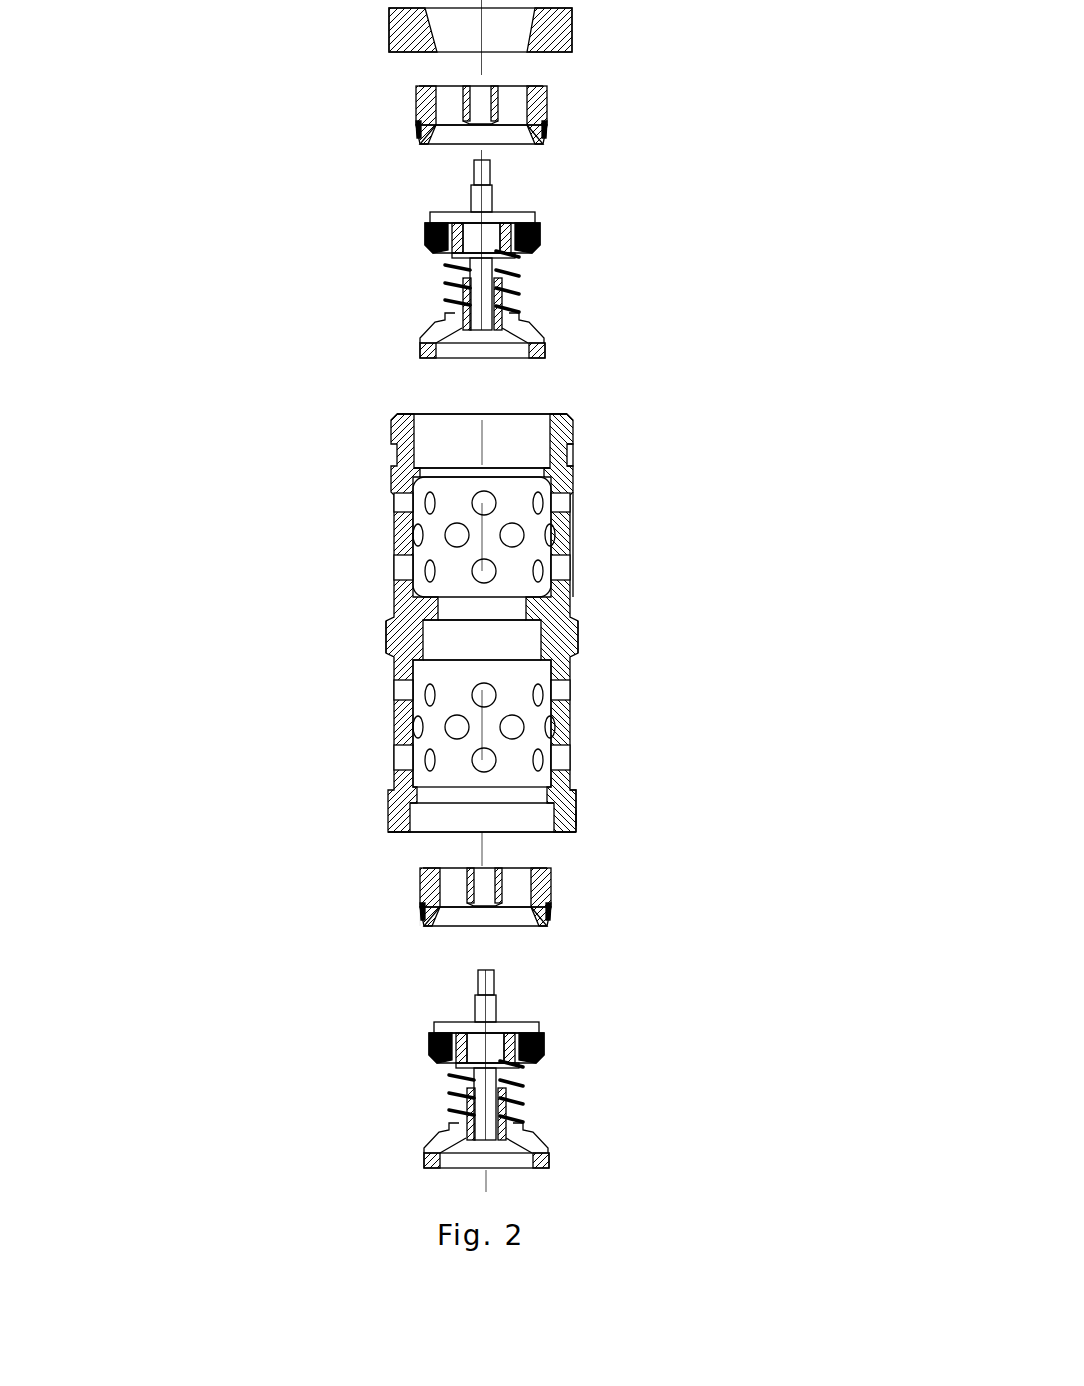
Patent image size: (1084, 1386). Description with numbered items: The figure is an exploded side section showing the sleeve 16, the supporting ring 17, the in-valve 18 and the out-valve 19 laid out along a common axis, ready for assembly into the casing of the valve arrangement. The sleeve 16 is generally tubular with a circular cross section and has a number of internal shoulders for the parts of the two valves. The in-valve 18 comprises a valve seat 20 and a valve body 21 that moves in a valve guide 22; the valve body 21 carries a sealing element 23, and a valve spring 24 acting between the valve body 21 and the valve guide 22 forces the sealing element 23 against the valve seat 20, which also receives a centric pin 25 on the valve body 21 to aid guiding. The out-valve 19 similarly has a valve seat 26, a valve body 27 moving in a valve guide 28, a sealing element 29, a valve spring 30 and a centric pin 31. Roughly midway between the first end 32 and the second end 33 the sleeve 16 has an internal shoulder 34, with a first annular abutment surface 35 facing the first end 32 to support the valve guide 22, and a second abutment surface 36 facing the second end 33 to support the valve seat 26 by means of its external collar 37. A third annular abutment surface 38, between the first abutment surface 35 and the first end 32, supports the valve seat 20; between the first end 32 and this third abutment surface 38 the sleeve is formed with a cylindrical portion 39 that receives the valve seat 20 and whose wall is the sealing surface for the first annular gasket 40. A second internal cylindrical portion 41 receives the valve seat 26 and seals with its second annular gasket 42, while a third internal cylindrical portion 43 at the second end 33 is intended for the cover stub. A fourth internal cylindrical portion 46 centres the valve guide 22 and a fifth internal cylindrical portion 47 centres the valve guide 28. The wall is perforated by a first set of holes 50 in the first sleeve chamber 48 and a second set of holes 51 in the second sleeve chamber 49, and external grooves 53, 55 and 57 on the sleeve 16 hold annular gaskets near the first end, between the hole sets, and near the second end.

The sleeve 16 is at (496, 643).
The supporting ring 17 is at (573, 28).
The in-valve 18 is at (556, 259).
The out-valve 19 is at (544, 1093).
The valve seat 20 is at (583, 128).
The valve body 21 is at (510, 218).
The valve guide 22 is at (430, 333).
The sealing element 23 is at (545, 240).
The valve spring 24 is at (447, 287).
The centric pin 25 is at (470, 183).
The valve seat 26 is at (488, 940).
The valve body 27 is at (514, 1030).
The valve guide 28 is at (442, 1150).
The sealing element 29 is at (546, 1050).
The valve spring 30 is at (456, 1093).
The centric pin 31 is at (437, 1023).
The first end 32 is at (552, 414).
The second end 33 is at (573, 835).
The internal shoulder 34 is at (445, 612).
The first annular abutment surface 35 is at (578, 573).
The second abutment surface 36 is at (430, 695).
The external collar 37 is at (428, 905).
The third annular abutment surface 38 is at (523, 463).
The upper bore 39 is at (440, 455).
The first annular gasket 40 is at (548, 135).
The second internal cylindrical portion 41 is at (460, 650).
The second annular gasket 42 is at (550, 893).
The third internal cylindrical portion 43 is at (575, 792).
The fourth internal cylindrical portion 46 is at (430, 571).
The fifth internal cylindrical portion 47 is at (452, 832).
The first sleeve chamber 48 is at (525, 535).
The second sleeve chamber 49 is at (545, 705).
The first set of holes 50 is at (465, 500).
The second set of holes 51 is at (515, 730).
The external groove 53 is at (577, 466).
The external groove 55 is at (578, 632).
The external groove 57 is at (582, 818).